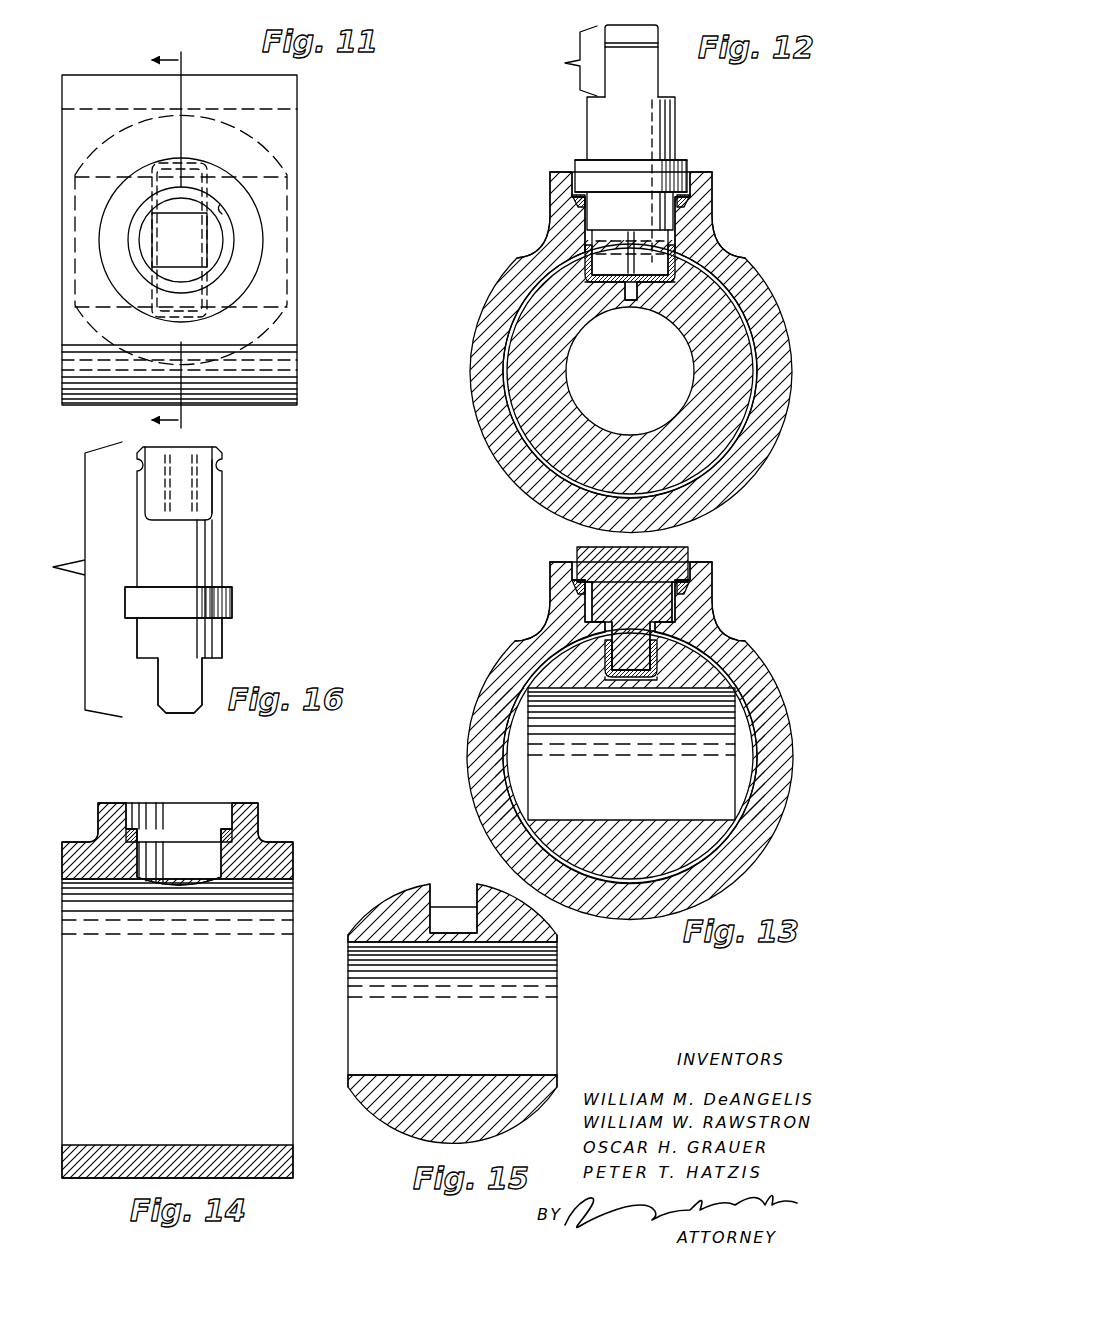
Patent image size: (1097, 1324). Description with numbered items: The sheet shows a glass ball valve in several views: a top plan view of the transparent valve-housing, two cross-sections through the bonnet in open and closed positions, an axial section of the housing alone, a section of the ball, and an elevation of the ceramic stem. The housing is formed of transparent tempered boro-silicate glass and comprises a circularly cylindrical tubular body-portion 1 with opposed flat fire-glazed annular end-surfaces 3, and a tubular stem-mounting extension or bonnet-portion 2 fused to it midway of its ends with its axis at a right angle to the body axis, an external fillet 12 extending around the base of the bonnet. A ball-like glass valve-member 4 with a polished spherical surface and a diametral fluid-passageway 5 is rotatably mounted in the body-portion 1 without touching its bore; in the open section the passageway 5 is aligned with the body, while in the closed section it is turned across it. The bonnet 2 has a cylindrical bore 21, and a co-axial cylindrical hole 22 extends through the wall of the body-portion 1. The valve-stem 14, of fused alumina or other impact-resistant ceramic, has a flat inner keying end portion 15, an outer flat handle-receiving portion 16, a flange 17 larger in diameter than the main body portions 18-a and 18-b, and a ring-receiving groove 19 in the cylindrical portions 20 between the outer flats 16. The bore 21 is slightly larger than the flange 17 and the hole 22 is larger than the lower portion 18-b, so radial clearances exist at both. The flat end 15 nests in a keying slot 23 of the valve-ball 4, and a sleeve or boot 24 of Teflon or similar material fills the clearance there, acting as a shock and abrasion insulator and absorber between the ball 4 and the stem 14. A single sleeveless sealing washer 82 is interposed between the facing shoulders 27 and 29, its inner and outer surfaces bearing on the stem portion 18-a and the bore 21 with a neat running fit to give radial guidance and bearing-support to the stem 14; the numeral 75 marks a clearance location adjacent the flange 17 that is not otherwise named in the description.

In FIG. 11, the tubular body-portion 1 is at (290, 328).
In FIG. 12, the tubular body-portion 1 is at (486, 378).
In FIG. 13, the tubular body-portion 1 is at (756, 836).
In FIG. 11, the stem-mounting extension or bonnet-portion 2 is at (246, 258).
In FIG. 14, the stem-mounting extension or bonnet-portion 2 is at (252, 819).
In FIG. 12, the stem-mounting extension or bonnet-portion 2 is at (706, 190).
In FIG. 13, the stem-mounting extension or bonnet-portion 2 is at (713, 580).
In FIG. 11, the annular end-surfaces 3 is at (300, 380).
In FIG. 14, the annular end-surfaces 3 is at (60, 1160).
In FIG. 11, the ball-like valve-member 4 is at (268, 133).
In FIG. 12, the ball-like valve-member 4 is at (718, 312).
In FIG. 13, the ball-like valve-member 4 is at (702, 845).
In FIG. 15, the ball-like valve-member 4 is at (530, 1107).
In FIG. 12, the fluid-passageway 5 is at (688, 367).
In FIG. 13, the fluid-passageway 5 is at (690, 692).
In FIG. 15, the fluid-passageway 5 is at (487, 947).
In FIG. 11, the external fillet 12 is at (147, 241).
In FIG. 14, the external fillet 12 is at (272, 834).
In FIG. 12, the external fillet 12 is at (722, 222).
In FIG. 13, the external fillet 12 is at (720, 610).
In FIG. 16, the valve-stem 14 is at (48, 579).
In FIG. 13, the valve-stem 14 is at (690, 550).
In FIG. 16, the flat inner keying end portion 15 is at (168, 697).
In FIG. 12, the flat inner keying end portion 15 is at (660, 265).
In FIG. 13, the flat inner keying end portion 15 is at (652, 632).
In FIG. 11, the outer flat handle-receiving portion 16 is at (165, 237).
In FIG. 16, the outer flat handle-receiving portion 16 is at (205, 498).
In FIG. 12, the outer flat handle-receiving portion 16 is at (566, 61).
In FIG. 16, the flange 17 is at (198, 595).
In FIG. 12, the flange 17 is at (655, 171).
In FIG. 13, the flange 17 is at (692, 553).
In FIG. 16, the upper main body portion of valve-stem 18-a is at (185, 556).
In FIG. 12, the upper main body portion of valve-stem 18-a is at (600, 115).
In FIG. 16, the lower cylindrical portion of valve-stem 18-b is at (185, 643).
In FIG. 12, the lower cylindrical portion of valve-stem 18-b is at (600, 219).
In FIG. 13, the lower cylindrical portion of valve-stem 18-b is at (620, 610).
In FIG. 16, the ring-receiving groove 19 is at (223, 466).
In FIG. 12, the ring-receiving groove 19 is at (652, 45).
In FIG. 16, the cylindrical portions 20 is at (218, 522).
In FIG. 12, the cylindrical portions 20 is at (640, 82).
In FIG. 11, the cylindrical bore 21 is at (223, 210).
In FIG. 14, the cylindrical bore 21 is at (224, 830).
In FIG. 12, the cylindrical bore 21 is at (586, 188).
In FIG. 14, the cylindrical hole 22 is at (222, 868).
In FIG. 12, the keying slot 23 is at (627, 290).
In FIG. 15, the keying slot 23 is at (450, 912).
In FIG. 12, the sleeve or boot 24 is at (590, 271).
In FIG. 13, the sleeve or boot 24 is at (640, 658).
In FIG. 14, the shoulder 27 is at (226, 843).
In FIG. 16, the shoulder 29 is at (128, 622).
In FIG. 12, the shoulder 29 is at (648, 198).
In FIG. 11, the clearance 75 is at (232, 240).
In FIG. 16, the clearance 75 is at (130, 583).
In FIG. 12, the clearance 75 is at (578, 157).
In FIG. 14, the sleeveless sealing washer 82 is at (220, 838).
In FIG. 12, the sleeveless sealing washer 82 is at (689, 203).
In FIG. 13, the sleeveless sealing washer 82 is at (585, 592).